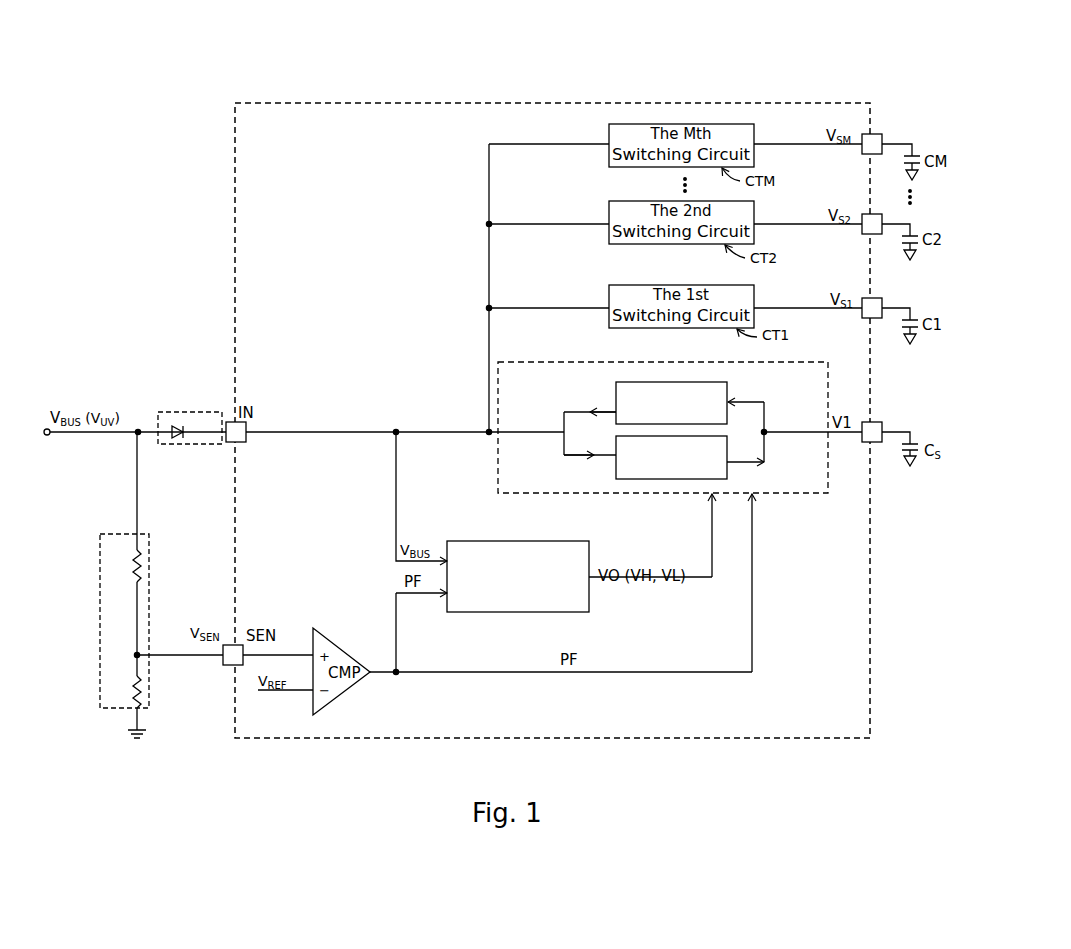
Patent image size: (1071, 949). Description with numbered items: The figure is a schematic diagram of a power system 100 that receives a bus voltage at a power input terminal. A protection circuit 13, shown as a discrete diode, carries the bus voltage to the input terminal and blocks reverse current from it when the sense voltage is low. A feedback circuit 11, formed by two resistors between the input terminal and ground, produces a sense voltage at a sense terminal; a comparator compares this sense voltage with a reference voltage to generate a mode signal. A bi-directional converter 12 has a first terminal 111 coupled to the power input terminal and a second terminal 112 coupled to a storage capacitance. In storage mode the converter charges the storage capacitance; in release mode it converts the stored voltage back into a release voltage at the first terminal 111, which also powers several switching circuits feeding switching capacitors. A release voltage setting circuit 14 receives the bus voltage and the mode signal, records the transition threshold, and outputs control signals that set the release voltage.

The power system 100 is at (942, 16).
The feedback circuit 11 is at (152, 709).
The bi-directional converter 12 is at (676, 517).
The protection circuit 13 is at (178, 448).
The release voltage setting circuit 14 is at (516, 614).
The first terminal 111 is at (560, 438).
The second terminal 112 is at (767, 436).